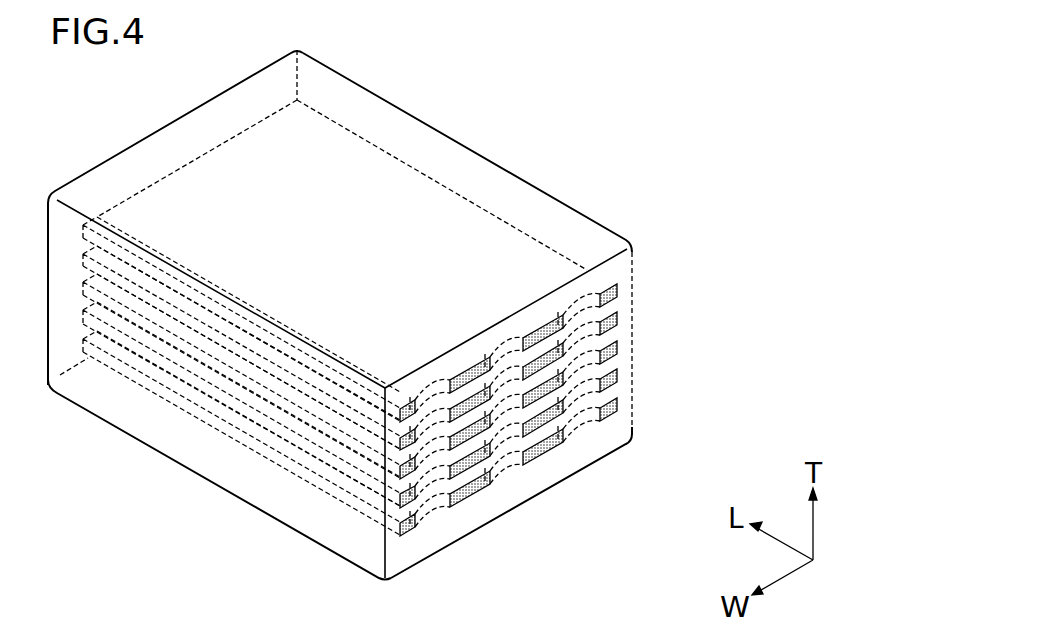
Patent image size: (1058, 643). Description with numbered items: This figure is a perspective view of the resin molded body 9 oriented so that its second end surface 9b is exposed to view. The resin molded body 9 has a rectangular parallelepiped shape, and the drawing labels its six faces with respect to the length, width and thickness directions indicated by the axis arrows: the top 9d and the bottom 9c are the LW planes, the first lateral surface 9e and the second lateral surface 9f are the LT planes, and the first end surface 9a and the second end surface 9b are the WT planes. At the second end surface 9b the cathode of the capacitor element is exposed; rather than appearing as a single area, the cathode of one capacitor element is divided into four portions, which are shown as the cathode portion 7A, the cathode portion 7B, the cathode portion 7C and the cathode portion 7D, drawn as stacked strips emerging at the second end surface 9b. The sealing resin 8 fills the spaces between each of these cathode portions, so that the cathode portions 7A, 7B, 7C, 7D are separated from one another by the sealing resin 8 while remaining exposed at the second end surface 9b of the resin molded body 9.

The resin molded body 9 is at (85, 126).
The first end surface 9a is at (204, 132).
The second end surface 9b is at (623, 333).
The bottom 9c is at (275, 485).
The top 9d is at (375, 215).
The first lateral surface 9e is at (178, 372).
The second lateral surface 9f is at (390, 130).
The cathode portion 7A is at (417, 507).
The cathode portion 7B is at (478, 470).
The cathode portion 7C is at (565, 452).
The cathode portion 7D is at (608, 392).
The sealing resin 8 is at (430, 482).